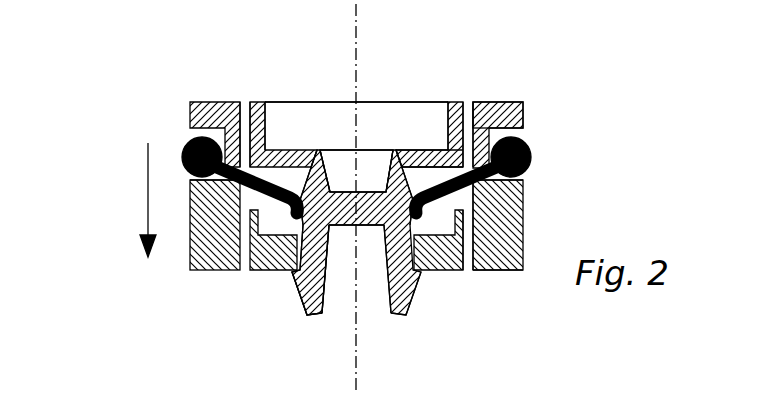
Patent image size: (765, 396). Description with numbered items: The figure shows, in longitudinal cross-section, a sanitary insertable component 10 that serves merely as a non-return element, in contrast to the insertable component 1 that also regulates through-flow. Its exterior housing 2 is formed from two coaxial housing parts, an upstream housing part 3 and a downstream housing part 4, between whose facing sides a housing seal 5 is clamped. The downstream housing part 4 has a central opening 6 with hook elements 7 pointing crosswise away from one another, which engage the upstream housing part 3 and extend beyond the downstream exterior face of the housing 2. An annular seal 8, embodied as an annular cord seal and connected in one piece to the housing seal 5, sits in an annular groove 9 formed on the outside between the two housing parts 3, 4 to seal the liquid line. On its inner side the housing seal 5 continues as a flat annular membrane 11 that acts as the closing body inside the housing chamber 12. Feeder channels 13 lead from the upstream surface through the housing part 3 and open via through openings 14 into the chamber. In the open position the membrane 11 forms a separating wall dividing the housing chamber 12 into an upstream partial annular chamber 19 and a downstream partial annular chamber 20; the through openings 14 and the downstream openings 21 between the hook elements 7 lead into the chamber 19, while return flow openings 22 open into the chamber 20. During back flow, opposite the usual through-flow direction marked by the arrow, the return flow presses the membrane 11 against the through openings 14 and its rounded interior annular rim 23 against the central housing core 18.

The insertable component 1 is at (148, 200).
The exterior housing 2 is at (524, 243).
The upstream housing part 3 is at (486, 106).
The downstream housing part 4 is at (497, 273).
The housing seal 5 is at (492, 205).
The central opening 6 is at (305, 272).
The hook elements 7 is at (312, 318).
The annular seal 8 is at (543, 155).
The annular groove 9 is at (534, 135).
The insertable component 10 is at (506, 77).
The annular membrane 11 is at (418, 158).
The housing chamber 12 is at (421, 180).
The feeder channels 13 is at (250, 156).
The through openings 14 is at (282, 139).
The central housing core 18 is at (374, 227).
The upstream partial annular chamber 19 is at (300, 168).
The downstream partial annular chamber 20 is at (270, 226).
The downstream openings 21 is at (377, 274).
The return flow openings 22 is at (470, 282).
The interior annular rim 23 is at (356, 171).